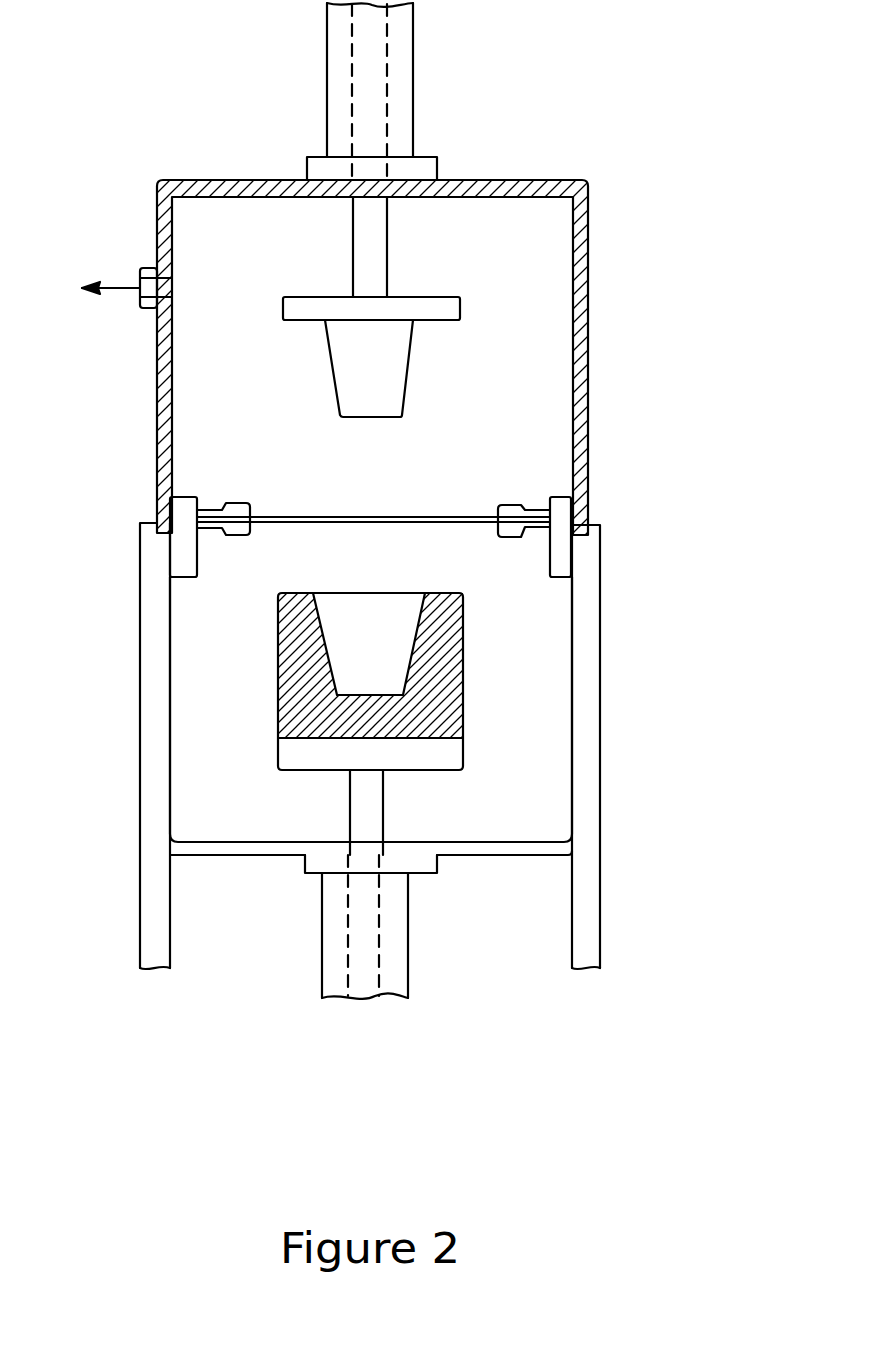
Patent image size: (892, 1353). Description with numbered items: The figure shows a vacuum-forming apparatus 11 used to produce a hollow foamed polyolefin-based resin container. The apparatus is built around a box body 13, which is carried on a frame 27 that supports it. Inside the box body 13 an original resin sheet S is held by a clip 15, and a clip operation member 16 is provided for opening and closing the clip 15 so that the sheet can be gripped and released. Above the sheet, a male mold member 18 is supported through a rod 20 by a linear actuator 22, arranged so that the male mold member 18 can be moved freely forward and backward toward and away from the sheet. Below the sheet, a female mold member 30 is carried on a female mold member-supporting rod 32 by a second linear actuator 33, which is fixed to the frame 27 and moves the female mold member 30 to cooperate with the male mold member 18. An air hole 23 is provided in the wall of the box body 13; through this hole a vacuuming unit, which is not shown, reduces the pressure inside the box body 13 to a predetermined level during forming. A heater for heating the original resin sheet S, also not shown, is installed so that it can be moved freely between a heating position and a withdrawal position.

The vacuum-forming apparatus 11 is at (670, 147).
The box body 13 is at (588, 275).
The linear actuator 22 is at (403, 70).
The rod 20 is at (378, 238).
The male mold member 18 is at (393, 362).
The air hole 23 is at (138, 293).
The clip operation member 16 is at (565, 513).
The clip 15 is at (512, 508).
The original resin sheet S is at (418, 516).
The frame 27 is at (515, 850).
The female mold member 30 is at (458, 705).
The female mold member-supporting rod 32 is at (355, 802).
The linear actuator 33 is at (328, 948).